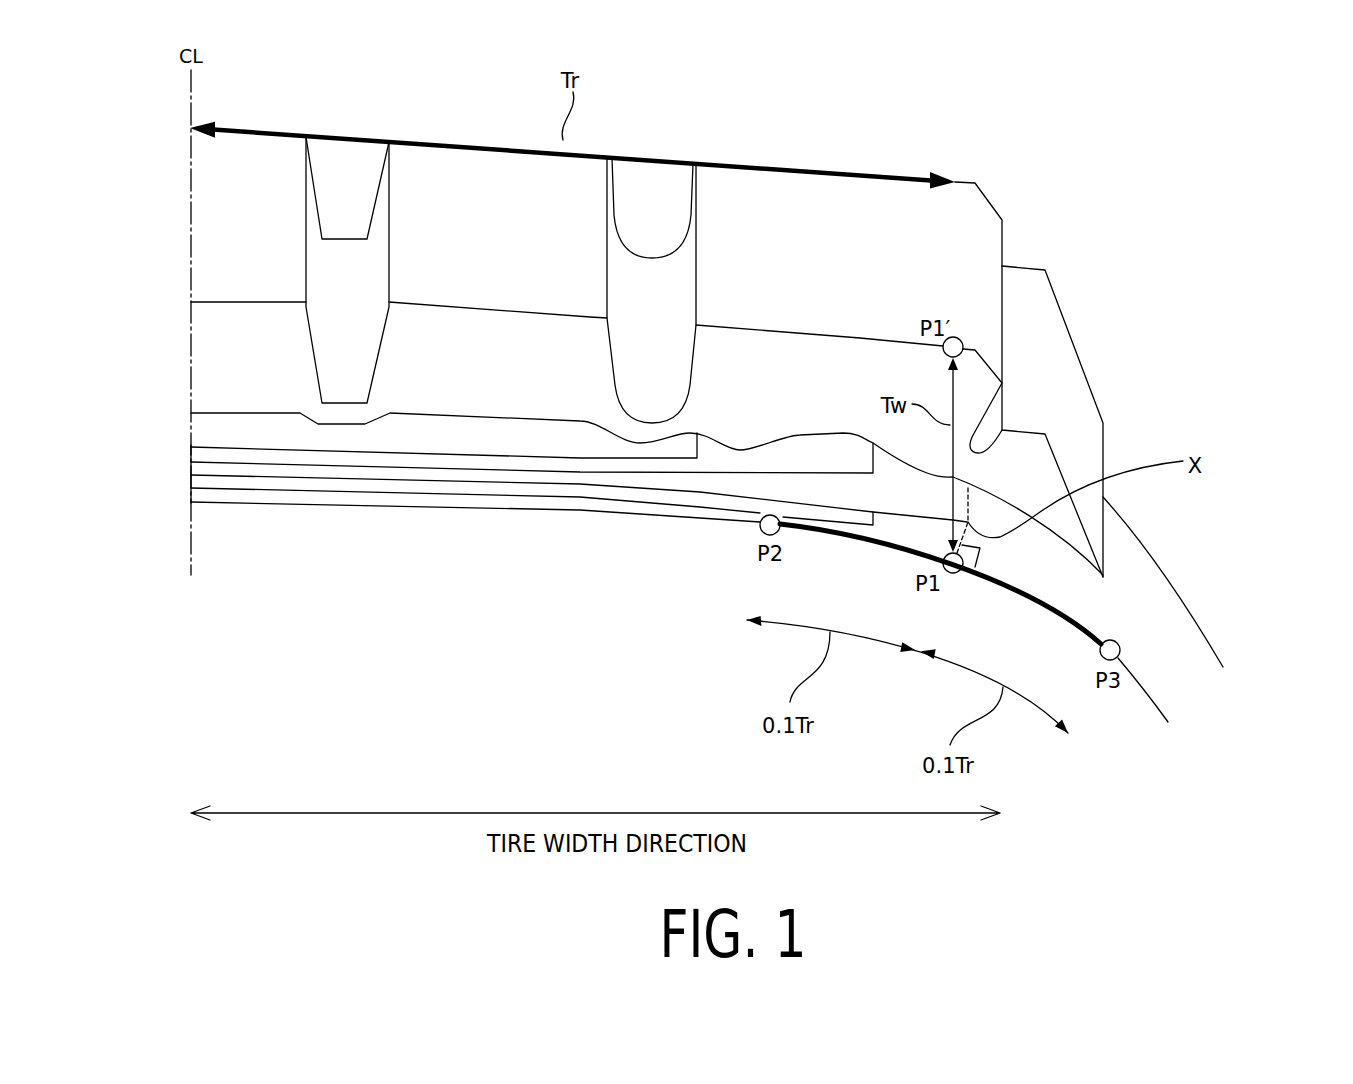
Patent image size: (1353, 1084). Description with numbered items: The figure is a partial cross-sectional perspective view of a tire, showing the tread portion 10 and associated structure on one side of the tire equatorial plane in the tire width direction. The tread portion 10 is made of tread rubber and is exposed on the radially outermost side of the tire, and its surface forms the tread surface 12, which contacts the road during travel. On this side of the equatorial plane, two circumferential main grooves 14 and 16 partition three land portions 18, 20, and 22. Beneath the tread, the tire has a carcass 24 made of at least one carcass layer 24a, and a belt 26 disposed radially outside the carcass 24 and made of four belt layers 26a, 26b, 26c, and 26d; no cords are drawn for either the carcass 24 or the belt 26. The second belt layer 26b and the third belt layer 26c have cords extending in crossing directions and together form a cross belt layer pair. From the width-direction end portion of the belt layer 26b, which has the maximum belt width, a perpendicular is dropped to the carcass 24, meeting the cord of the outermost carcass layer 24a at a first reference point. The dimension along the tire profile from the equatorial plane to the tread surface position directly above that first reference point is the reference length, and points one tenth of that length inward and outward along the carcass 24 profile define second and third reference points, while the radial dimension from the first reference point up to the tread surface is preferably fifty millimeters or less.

The tread portion 10 is at (760, 112).
The tread surface 12 is at (475, 157).
The circumferential main groove 14 is at (352, 162).
The circumferential main groove 16 is at (650, 173).
The land portion 18 is at (242, 247).
The land portion 20 is at (482, 250).
The land portion 22 is at (777, 277).
The carcass 24 is at (1163, 609).
The carcass layer 24a is at (1168, 625).
The belt 26 is at (290, 700).
The belt layer 26a is at (745, 505).
The belt layer 26b is at (735, 483).
The belt layer 26c is at (723, 462).
The belt layer 26d is at (473, 440).